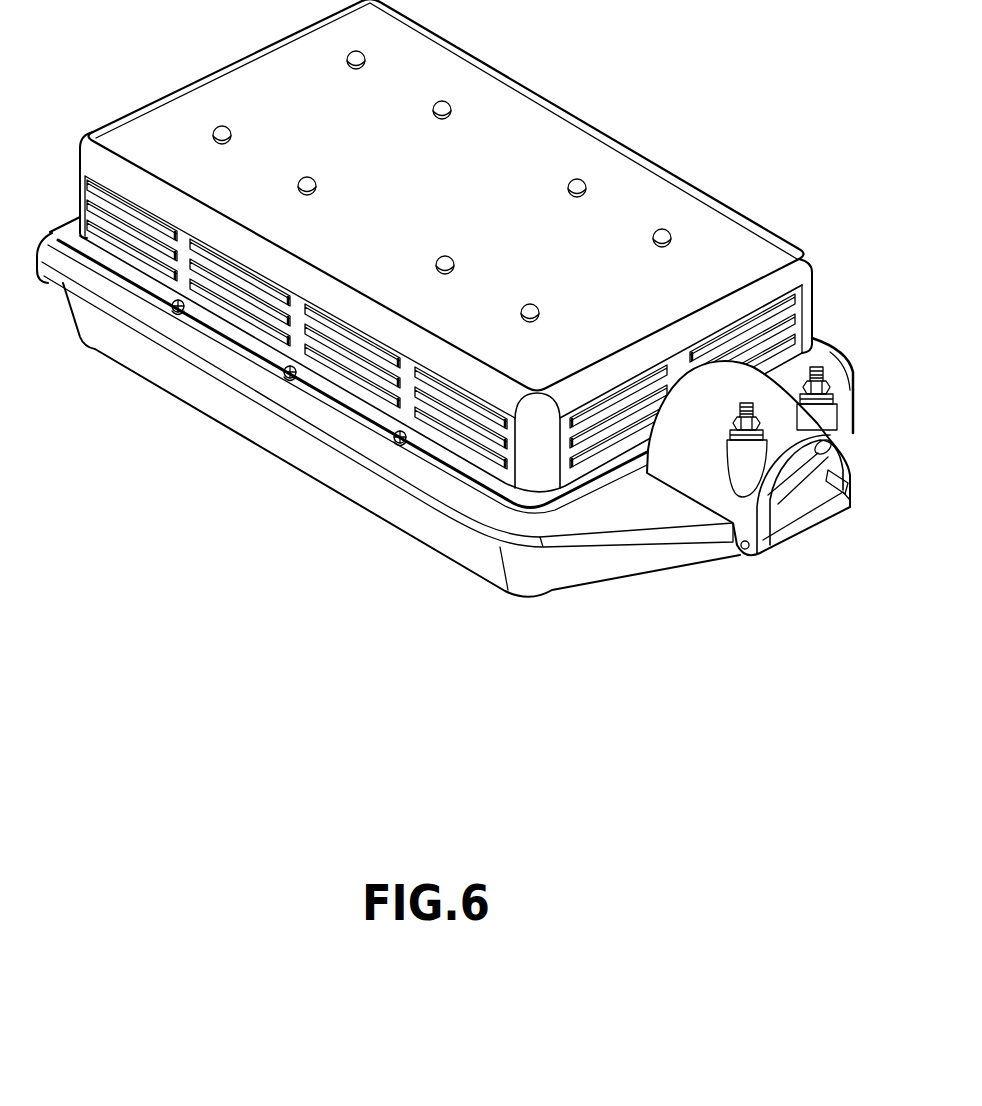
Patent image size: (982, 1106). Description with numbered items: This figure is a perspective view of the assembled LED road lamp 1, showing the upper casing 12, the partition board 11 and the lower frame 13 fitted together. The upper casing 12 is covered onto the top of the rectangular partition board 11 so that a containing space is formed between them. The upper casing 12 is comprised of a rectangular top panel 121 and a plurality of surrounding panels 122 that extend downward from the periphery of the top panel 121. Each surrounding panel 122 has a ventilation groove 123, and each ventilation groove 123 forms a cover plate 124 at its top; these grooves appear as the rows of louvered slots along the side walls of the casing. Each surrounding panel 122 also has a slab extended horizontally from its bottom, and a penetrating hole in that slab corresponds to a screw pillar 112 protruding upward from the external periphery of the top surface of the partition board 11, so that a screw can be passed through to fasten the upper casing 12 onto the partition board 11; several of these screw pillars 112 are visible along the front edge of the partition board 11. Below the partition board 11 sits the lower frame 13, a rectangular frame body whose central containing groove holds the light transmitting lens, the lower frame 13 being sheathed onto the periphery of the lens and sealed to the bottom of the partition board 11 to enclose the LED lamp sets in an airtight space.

The LED road lamp 1 is at (763, 157).
The partition board 11 is at (463, 500).
The screw pillar 112 is at (395, 440).
The upper casing 12 is at (656, 150).
The top panel 121 is at (491, 107).
The surrounding panel 122 is at (803, 294).
The ventilation groove 123 is at (567, 458).
The cover plate 124 is at (593, 450).
The lower frame 13 is at (213, 403).